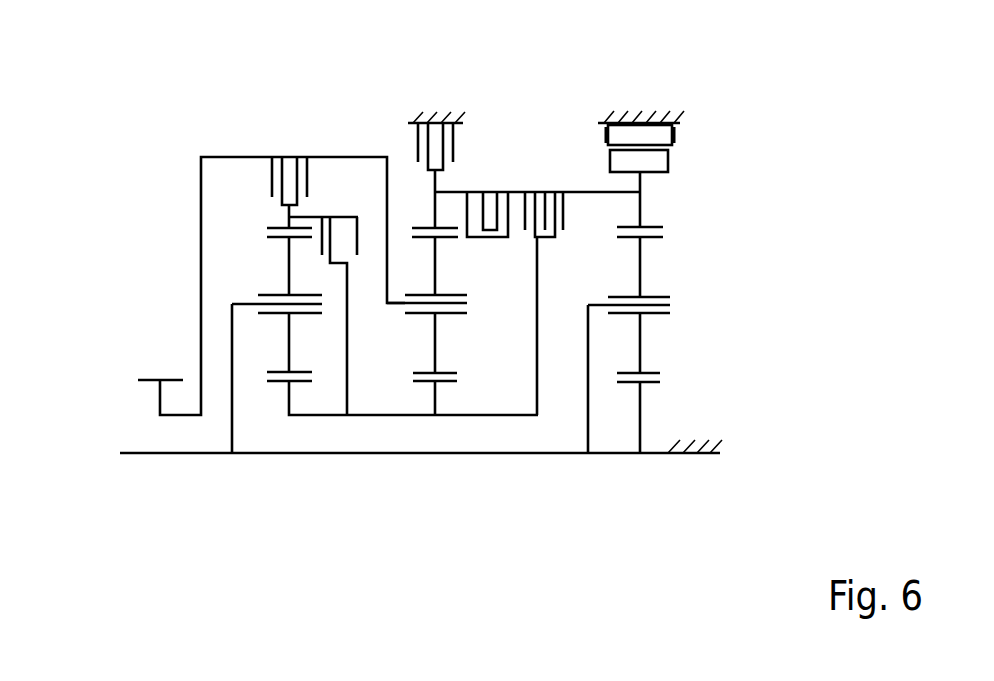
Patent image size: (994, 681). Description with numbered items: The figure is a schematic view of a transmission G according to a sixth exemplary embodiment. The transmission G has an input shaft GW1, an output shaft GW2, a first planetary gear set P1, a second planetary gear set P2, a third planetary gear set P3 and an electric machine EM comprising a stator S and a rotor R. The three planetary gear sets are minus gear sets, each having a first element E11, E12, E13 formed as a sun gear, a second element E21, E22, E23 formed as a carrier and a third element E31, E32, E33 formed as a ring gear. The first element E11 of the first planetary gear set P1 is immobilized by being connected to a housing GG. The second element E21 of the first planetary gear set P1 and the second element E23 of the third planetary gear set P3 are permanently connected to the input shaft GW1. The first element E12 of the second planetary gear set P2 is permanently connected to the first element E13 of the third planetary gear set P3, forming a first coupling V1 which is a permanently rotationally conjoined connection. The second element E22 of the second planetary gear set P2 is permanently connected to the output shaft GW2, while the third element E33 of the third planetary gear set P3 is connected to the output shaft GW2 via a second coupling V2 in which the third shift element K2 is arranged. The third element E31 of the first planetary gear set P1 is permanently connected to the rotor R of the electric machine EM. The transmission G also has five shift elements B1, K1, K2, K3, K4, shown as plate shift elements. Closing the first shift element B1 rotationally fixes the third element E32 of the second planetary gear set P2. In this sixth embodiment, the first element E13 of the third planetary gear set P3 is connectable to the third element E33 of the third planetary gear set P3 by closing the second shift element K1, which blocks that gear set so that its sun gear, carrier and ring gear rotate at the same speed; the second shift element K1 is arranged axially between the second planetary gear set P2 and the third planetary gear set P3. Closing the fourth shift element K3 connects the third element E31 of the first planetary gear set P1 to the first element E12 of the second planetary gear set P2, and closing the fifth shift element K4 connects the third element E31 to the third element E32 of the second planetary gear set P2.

The transmission G is at (172, 233).
The housing GG is at (700, 440).
The input shaft GW1 is at (180, 455).
The output shaft GW2 is at (145, 377).
The electric machine EM is at (795, 113).
The stator S is at (684, 135).
The rotor R is at (684, 160).
The first planetary gear set P1 is at (640, 462).
The second planetary gear set P2 is at (435, 462).
The third planetary gear set P3 is at (288, 462).
The first element of the first planetary gear set E11 is at (624, 384).
The second element of the first planetary gear set E21 is at (593, 301).
The third element of the first planetary gear set E31 is at (648, 226).
The first element of the second planetary gear set E12 is at (451, 385).
The second element of the second planetary gear set E22 is at (393, 312).
The third element of the second planetary gear set E32 is at (418, 222).
The first element of the third planetary gear set E13 is at (272, 383).
The second element of the third planetary gear set E23 is at (245, 297).
The third element of the third planetary gear set E33 is at (267, 223).
The second shift element K1 is at (340, 212).
The third shift element K2 is at (287, 150).
The fourth shift element K3 is at (553, 185).
The fifth shift element K4 is at (500, 185).
The first shift element B1 is at (470, 128).
The first coupling V1 is at (325, 417).
The second coupling V2 is at (287, 212).